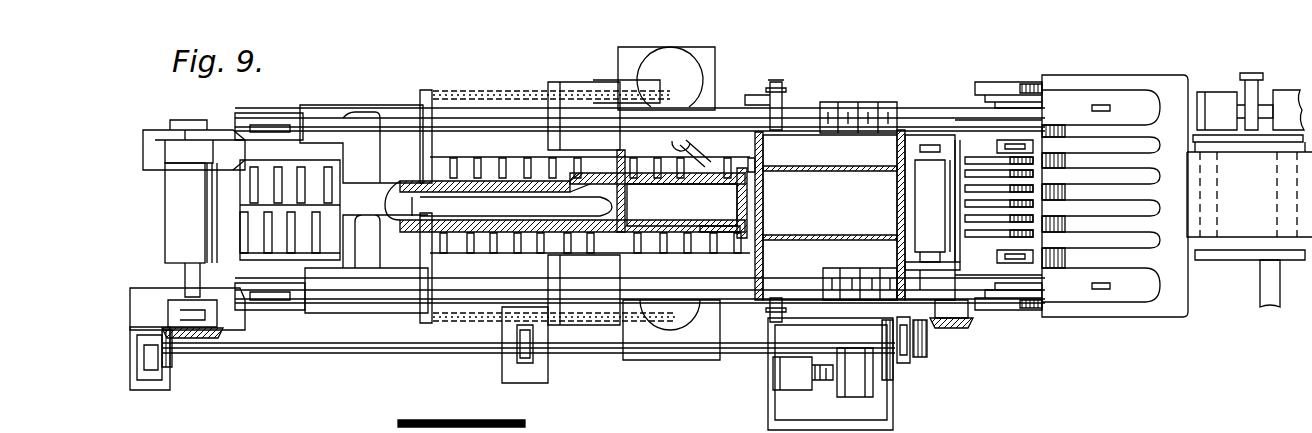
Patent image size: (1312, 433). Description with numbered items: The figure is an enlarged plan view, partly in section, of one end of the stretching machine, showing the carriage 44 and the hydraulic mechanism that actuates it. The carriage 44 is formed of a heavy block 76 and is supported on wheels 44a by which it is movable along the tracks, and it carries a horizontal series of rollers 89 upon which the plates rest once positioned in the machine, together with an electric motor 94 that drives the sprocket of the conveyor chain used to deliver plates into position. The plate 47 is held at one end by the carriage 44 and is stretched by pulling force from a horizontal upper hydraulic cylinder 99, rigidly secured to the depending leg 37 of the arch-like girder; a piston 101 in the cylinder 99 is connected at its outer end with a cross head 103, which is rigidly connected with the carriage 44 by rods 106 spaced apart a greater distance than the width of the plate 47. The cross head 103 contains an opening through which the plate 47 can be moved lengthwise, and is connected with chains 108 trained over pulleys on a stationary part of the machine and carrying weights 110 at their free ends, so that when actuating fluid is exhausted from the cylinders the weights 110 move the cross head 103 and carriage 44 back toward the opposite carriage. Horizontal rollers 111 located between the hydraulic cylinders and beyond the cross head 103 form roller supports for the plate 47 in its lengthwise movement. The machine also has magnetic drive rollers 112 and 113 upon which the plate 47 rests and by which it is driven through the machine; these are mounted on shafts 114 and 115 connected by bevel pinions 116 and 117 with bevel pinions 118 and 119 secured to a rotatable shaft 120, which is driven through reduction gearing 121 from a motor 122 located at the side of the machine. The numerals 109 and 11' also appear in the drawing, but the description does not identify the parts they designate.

The magnetic drive roller 113 is at (190, 185).
The horizontal rollers 111 is at (235, 210).
The cross head 103 is at (378, 118).
The chains 108 is at (485, 95).
The weights 110 is at (690, 73).
The bolt 109 is at (675, 98).
The rods 106 is at (709, 120).
The depending leg 37 is at (830, 160).
The piston 101 is at (628, 215).
The magnetic drive roller 112 is at (925, 190).
The upper hydraulic cylinder 99 is at (690, 235).
The plate 11' is at (722, 250).
The shaft 115 is at (202, 282).
The bevel pinion 117 is at (215, 338).
The bevel pinion 118 is at (172, 362).
The rotatable shaft 120 is at (570, 347).
The motor 122 is at (790, 375).
The reduction gearing 121 is at (890, 372).
The bevel pinion 119 is at (915, 352).
The bevel pinion 116 is at (950, 330).
The shaft 114 is at (940, 278).
The wheels 44a is at (1000, 83).
The heavy block 76 is at (1125, 308).
The carriage 44 is at (1176, 310).
The plate 47 is at (1242, 232).
The rollers 89 is at (1290, 152).
The electric motor 94 is at (1278, 95).